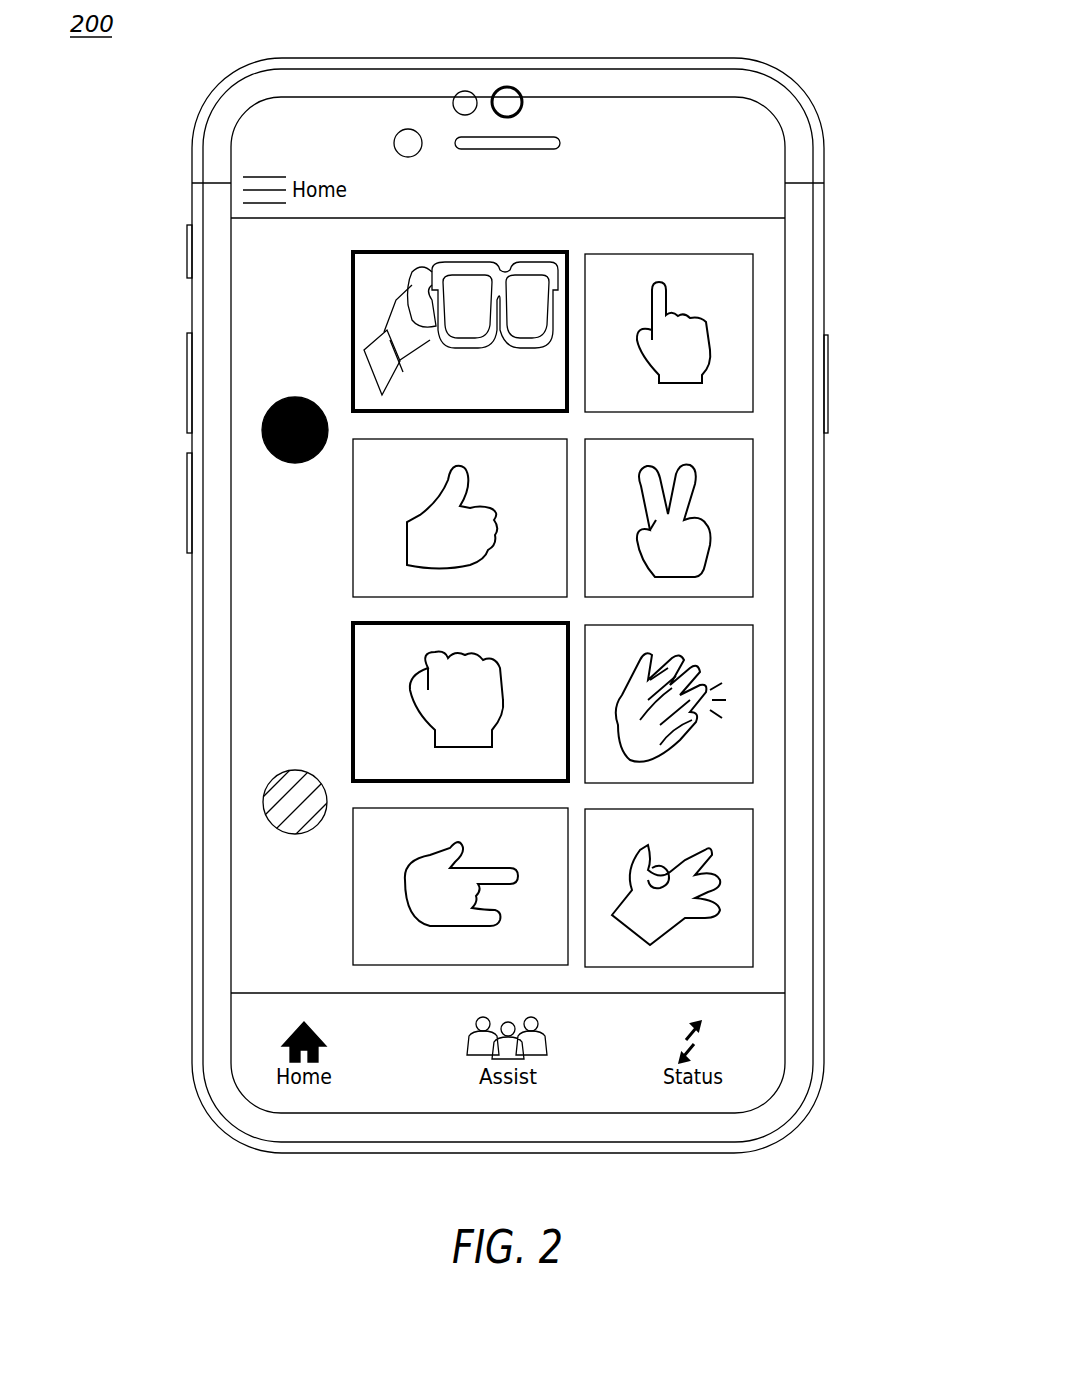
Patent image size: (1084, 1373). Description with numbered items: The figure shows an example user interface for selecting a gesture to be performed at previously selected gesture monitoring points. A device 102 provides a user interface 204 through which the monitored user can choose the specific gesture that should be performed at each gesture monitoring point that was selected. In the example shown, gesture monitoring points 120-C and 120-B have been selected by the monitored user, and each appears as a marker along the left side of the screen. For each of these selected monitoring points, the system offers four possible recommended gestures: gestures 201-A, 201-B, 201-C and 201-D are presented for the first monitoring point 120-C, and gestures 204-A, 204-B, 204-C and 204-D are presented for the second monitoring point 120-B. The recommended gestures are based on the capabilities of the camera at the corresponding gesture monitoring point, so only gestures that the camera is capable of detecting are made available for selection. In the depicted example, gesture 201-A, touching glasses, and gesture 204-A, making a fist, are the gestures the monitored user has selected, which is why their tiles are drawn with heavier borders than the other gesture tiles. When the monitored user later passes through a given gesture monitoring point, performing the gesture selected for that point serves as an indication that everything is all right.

The device 102 is at (510, 58).
The user interface 204 is at (658, 218).
The recommended gesture 201-A is at (353, 331).
The recommended gesture 201-B is at (753, 333).
The recommended gesture 201-C is at (352, 516).
The recommended gesture 201-D is at (753, 518).
The recommended gesture 204-A is at (353, 699).
The recommended gesture 204-B is at (753, 700).
The recommended gesture 204-C is at (753, 887).
The recommended gesture 204-D is at (353, 885).
The gesture monitoring point 120-B is at (262, 800).
The gesture monitoring point 120-C is at (262, 428).